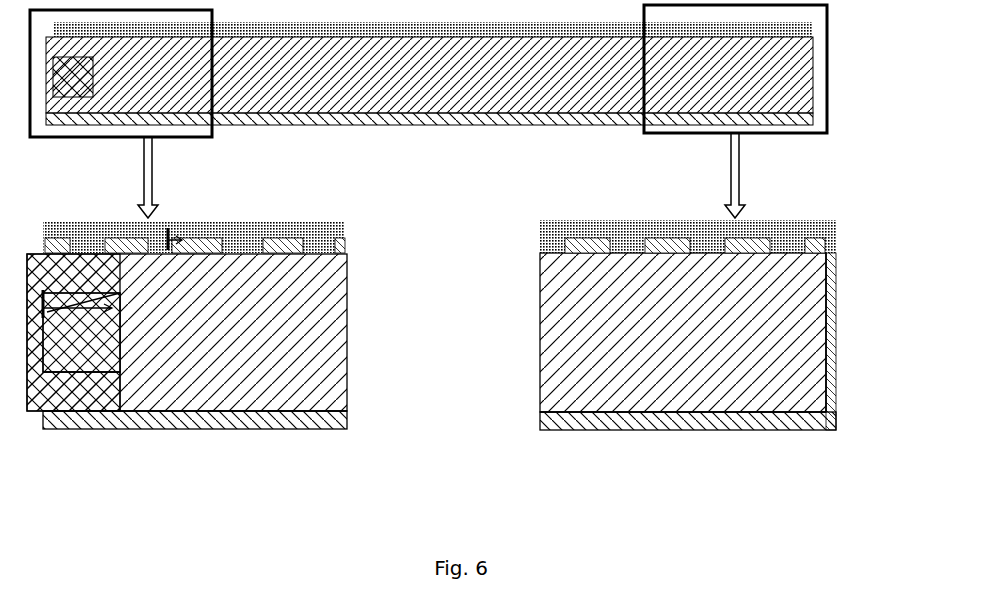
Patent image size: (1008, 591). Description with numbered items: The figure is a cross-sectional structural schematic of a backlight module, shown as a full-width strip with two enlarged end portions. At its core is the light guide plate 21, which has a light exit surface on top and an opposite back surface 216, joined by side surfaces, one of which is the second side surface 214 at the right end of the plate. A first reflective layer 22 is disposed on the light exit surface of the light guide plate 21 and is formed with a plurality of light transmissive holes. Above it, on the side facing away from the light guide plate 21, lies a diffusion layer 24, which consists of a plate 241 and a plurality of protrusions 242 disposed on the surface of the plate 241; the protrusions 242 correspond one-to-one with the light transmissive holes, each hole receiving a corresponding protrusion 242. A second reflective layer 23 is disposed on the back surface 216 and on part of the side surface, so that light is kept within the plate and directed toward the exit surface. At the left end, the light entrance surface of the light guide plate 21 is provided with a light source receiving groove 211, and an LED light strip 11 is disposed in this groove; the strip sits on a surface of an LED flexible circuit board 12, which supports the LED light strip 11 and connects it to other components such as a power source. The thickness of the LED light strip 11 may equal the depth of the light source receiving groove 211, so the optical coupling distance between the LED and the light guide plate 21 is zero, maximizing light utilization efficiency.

The LED light strip 11 is at (70, 348).
The LED flexible circuit board 12 is at (33, 383).
The light source receiving groove 211 is at (120, 370).
The light guide plate 21 is at (285, 332).
The first reflective layer 22 is at (280, 248).
The second reflective layer 23 is at (300, 421).
The diffusion layer 24 is at (540, 228).
The plate 241 is at (755, 230).
The protrusions 242 is at (795, 246).
The second side surface 214 is at (825, 340).
The back surface 216 is at (283, 413).